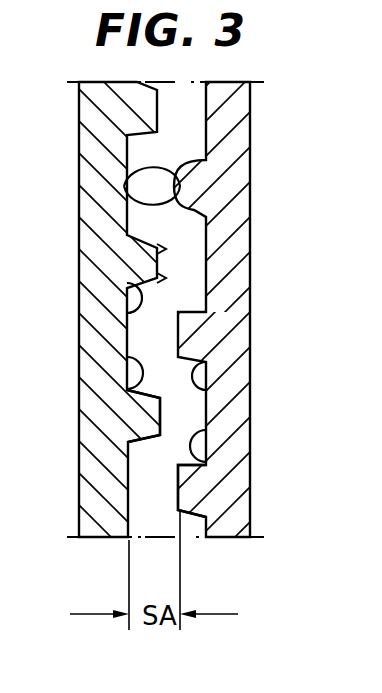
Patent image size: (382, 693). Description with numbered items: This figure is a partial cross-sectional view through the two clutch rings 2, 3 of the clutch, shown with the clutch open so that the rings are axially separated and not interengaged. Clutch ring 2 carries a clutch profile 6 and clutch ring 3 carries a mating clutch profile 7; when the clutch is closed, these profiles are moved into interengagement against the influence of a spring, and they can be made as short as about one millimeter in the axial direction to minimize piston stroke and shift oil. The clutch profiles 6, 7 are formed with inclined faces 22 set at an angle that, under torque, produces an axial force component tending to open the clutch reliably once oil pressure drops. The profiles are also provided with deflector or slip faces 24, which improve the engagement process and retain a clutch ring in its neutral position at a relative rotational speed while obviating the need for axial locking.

The clutch ring 2 is at (218, 188).
The clutch ring 3 is at (92, 472).
The clutch profile 6 is at (196, 490).
The clutch profile 7 is at (140, 415).
The face 22 is at (127, 308).
The deflector face or slip face 24 is at (163, 277).